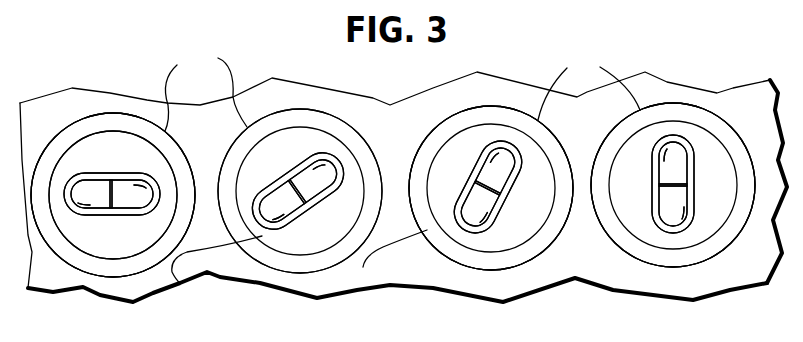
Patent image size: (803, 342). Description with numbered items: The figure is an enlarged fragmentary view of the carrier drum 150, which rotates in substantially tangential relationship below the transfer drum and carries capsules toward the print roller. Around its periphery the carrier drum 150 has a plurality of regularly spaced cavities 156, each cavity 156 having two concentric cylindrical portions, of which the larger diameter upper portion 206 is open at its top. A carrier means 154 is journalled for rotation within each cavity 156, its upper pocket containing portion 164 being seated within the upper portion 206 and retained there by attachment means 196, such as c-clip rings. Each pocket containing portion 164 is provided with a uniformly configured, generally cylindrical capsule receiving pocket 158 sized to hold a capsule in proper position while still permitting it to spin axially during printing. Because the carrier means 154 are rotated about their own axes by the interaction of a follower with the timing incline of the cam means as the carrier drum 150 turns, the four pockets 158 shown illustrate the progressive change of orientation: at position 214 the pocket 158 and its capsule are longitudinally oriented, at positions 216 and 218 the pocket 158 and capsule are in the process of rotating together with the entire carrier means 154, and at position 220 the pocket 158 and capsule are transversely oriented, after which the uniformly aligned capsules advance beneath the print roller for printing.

The carrier drum 150 is at (381, 93).
The carrier means 154 is at (107, 253).
The cavity 156 is at (233, 152).
The capsule receiving pocket 158 is at (100, 173).
The pocket containing portion 164 is at (145, 255).
The attachment means 196 is at (72, 253).
The upper portion 206 is at (402, 165).
The position 214 is at (88, 163).
The position 216 is at (287, 153).
The position 218 is at (500, 140).
The position 220 is at (670, 133).